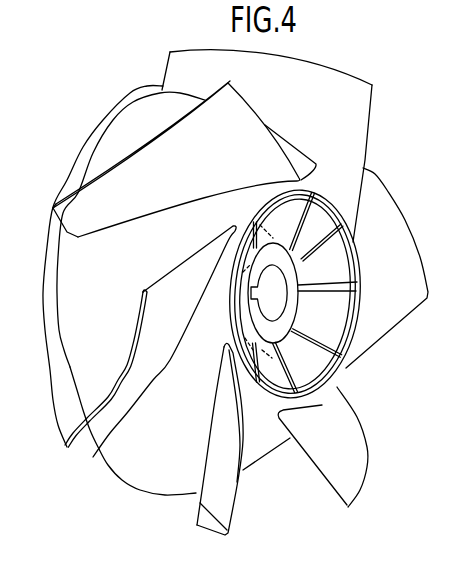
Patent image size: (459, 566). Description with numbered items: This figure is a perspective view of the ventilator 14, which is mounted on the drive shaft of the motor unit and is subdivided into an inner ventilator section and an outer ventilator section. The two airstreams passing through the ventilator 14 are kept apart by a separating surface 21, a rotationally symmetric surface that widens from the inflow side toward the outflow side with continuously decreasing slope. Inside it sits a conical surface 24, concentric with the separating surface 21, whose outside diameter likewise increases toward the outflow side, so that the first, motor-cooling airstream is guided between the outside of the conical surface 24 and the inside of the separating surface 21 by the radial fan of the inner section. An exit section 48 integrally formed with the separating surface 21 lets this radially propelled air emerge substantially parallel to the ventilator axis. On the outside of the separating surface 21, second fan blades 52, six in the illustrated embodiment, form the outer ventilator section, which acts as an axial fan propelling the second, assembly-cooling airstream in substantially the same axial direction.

The separating surface 21 is at (147, 121).
The exit section 48 is at (100, 463).
The second fan blades 52 is at (305, 82).
The ventilator 14 is at (373, 150).
The conical surface 24 is at (280, 242).